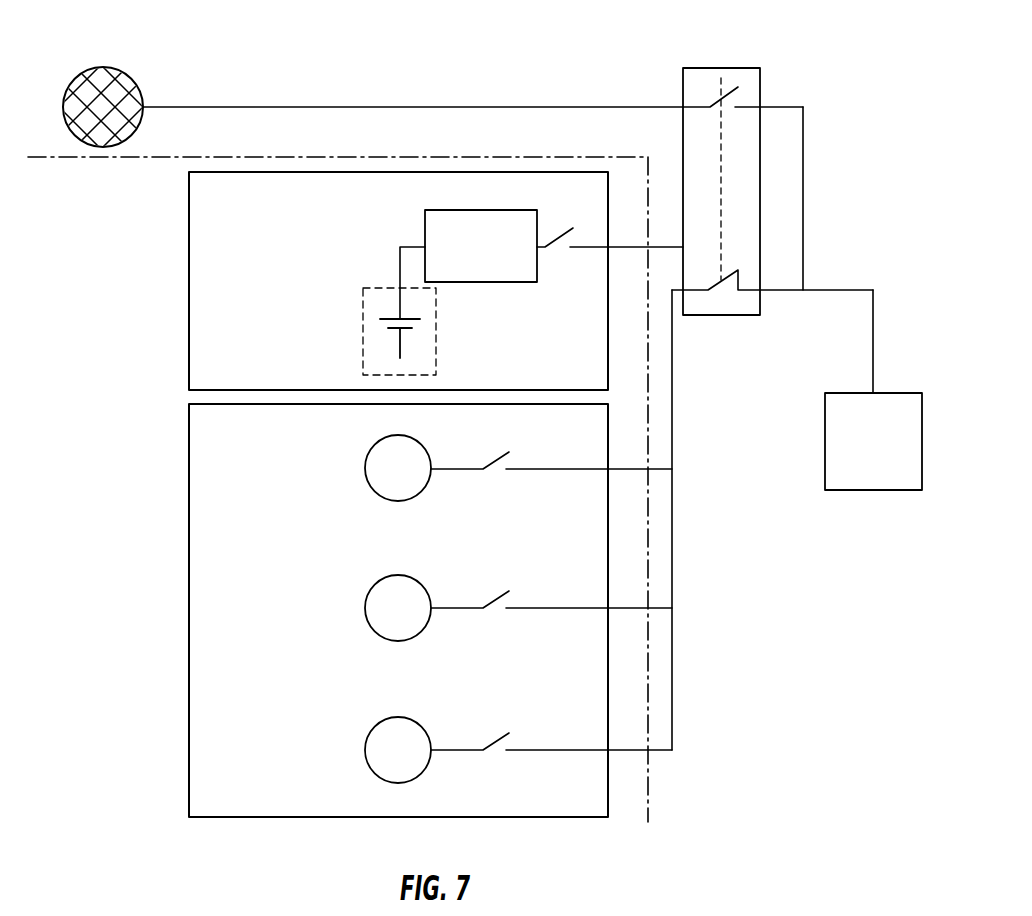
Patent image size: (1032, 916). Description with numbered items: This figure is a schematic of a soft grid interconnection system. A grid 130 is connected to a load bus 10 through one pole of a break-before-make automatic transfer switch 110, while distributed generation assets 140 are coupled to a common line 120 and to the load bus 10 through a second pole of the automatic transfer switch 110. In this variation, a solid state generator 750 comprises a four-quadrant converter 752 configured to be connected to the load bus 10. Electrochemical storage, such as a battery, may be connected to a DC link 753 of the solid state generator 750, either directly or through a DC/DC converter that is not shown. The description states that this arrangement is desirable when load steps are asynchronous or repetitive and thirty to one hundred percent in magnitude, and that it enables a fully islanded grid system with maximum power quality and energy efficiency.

The load bus 10 is at (829, 270).
The break-before-make automatic transfer switch 110 is at (748, 68).
The common line 120 is at (482, 553).
The grid 130 is at (166, 104).
The distributed generation assets 140 is at (365, 468).
The solid state generator 750 is at (387, 281).
The 4-quadrant converter 752 is at (500, 282).
The DC link 753 is at (398, 262).